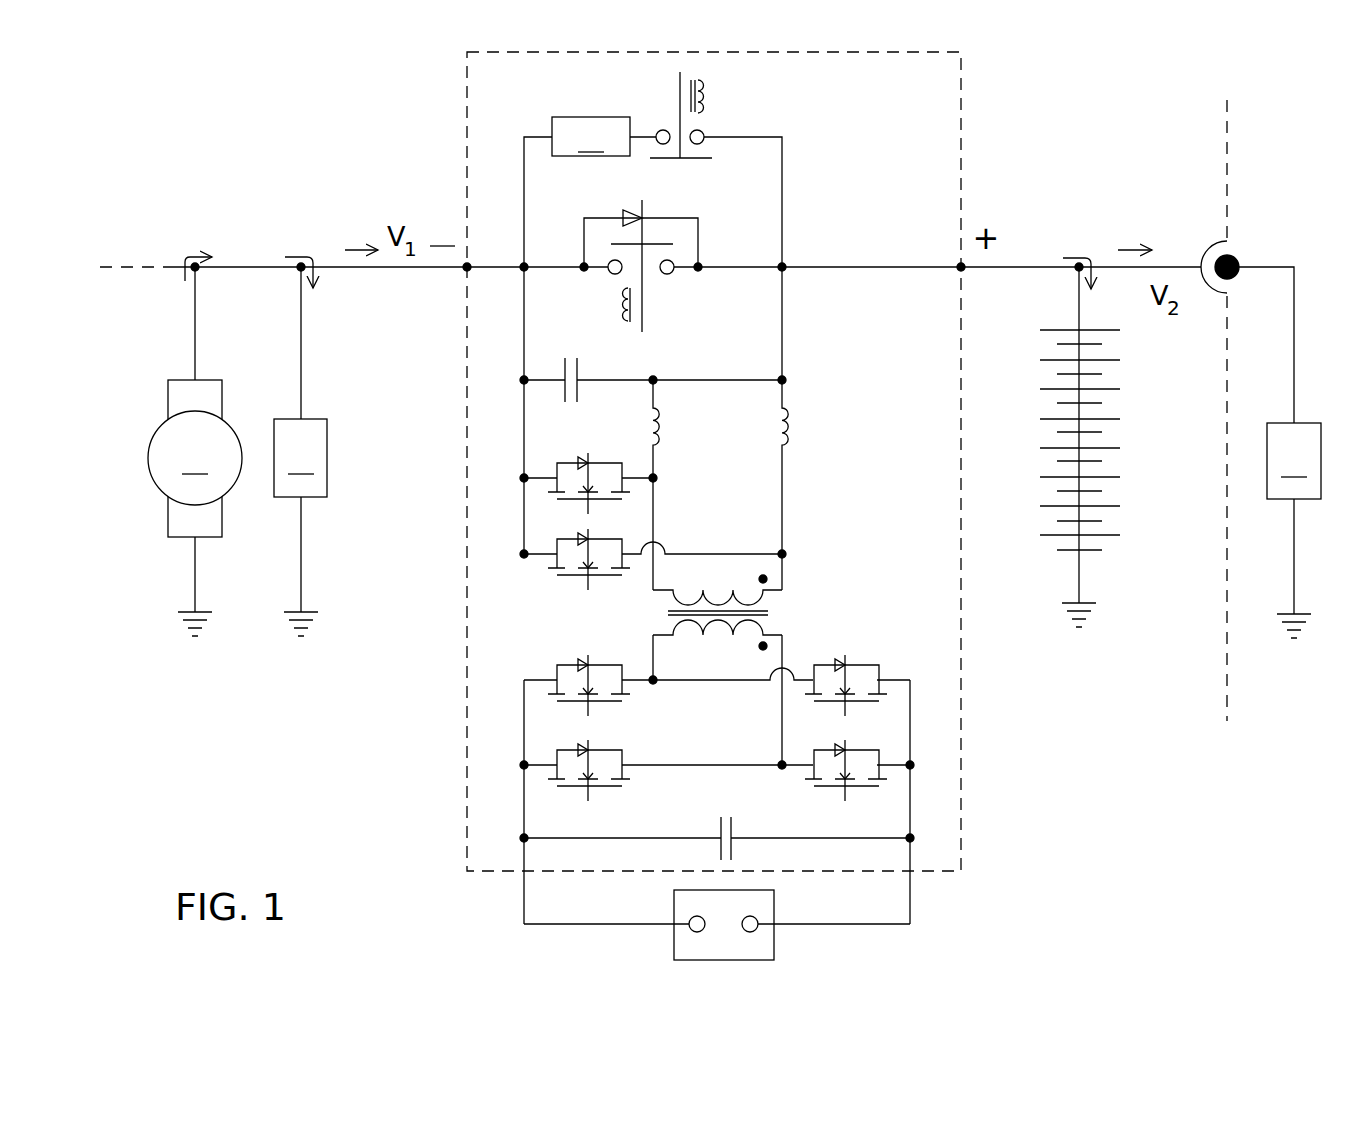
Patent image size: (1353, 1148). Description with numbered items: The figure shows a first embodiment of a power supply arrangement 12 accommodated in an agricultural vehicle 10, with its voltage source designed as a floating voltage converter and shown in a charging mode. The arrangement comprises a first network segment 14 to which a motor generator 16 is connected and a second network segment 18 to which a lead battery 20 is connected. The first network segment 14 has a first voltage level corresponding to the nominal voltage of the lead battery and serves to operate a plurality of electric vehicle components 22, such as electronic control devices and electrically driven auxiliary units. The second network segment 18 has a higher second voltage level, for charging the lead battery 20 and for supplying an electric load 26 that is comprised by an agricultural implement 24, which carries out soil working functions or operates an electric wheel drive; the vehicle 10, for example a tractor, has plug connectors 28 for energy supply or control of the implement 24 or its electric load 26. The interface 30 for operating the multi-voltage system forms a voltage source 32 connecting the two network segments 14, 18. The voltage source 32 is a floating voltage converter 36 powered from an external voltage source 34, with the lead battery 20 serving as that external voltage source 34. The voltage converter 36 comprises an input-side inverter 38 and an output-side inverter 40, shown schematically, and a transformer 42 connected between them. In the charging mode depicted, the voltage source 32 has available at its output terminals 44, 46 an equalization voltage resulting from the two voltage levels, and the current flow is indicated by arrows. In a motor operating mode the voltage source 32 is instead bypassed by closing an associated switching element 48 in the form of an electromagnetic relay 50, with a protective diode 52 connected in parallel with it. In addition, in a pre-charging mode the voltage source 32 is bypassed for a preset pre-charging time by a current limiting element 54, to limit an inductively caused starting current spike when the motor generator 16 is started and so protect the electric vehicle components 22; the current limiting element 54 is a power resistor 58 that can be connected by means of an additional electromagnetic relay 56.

The agricultural vehicle 10 is at (1172, 133).
The power supply arrangement 12 is at (193, 108).
The first network segment 14 is at (264, 267).
The motor generator 16 is at (195, 451).
The second network segment 18 is at (1102, 267).
The lead battery 20 is at (1128, 438).
The electric vehicle components 22 is at (300, 451).
The agricultural implement 24 is at (1251, 133).
The electric load 26 is at (1294, 530).
The plug connectors 28 is at (1213, 245).
The interface 30 is at (440, 127).
The voltage source 32 is at (963, 122).
The external voltage source 34 is at (774, 908).
The floating voltage converter 36 is at (875, 615).
The input-side inverter 38 is at (507, 773).
The output-side inverter 40 is at (494, 466).
The transformer 42 is at (566, 612).
The output terminal 44 is at (465, 270).
The output terminal 46 is at (961, 267).
The switching element 48 is at (674, 292).
The electromagnetic relay 50 is at (627, 327).
The protective diode 52 is at (643, 205).
The current limiting element 54 is at (527, 75).
The additional electromagnetic relay 56 is at (701, 86).
The power resistor 58 is at (591, 136).